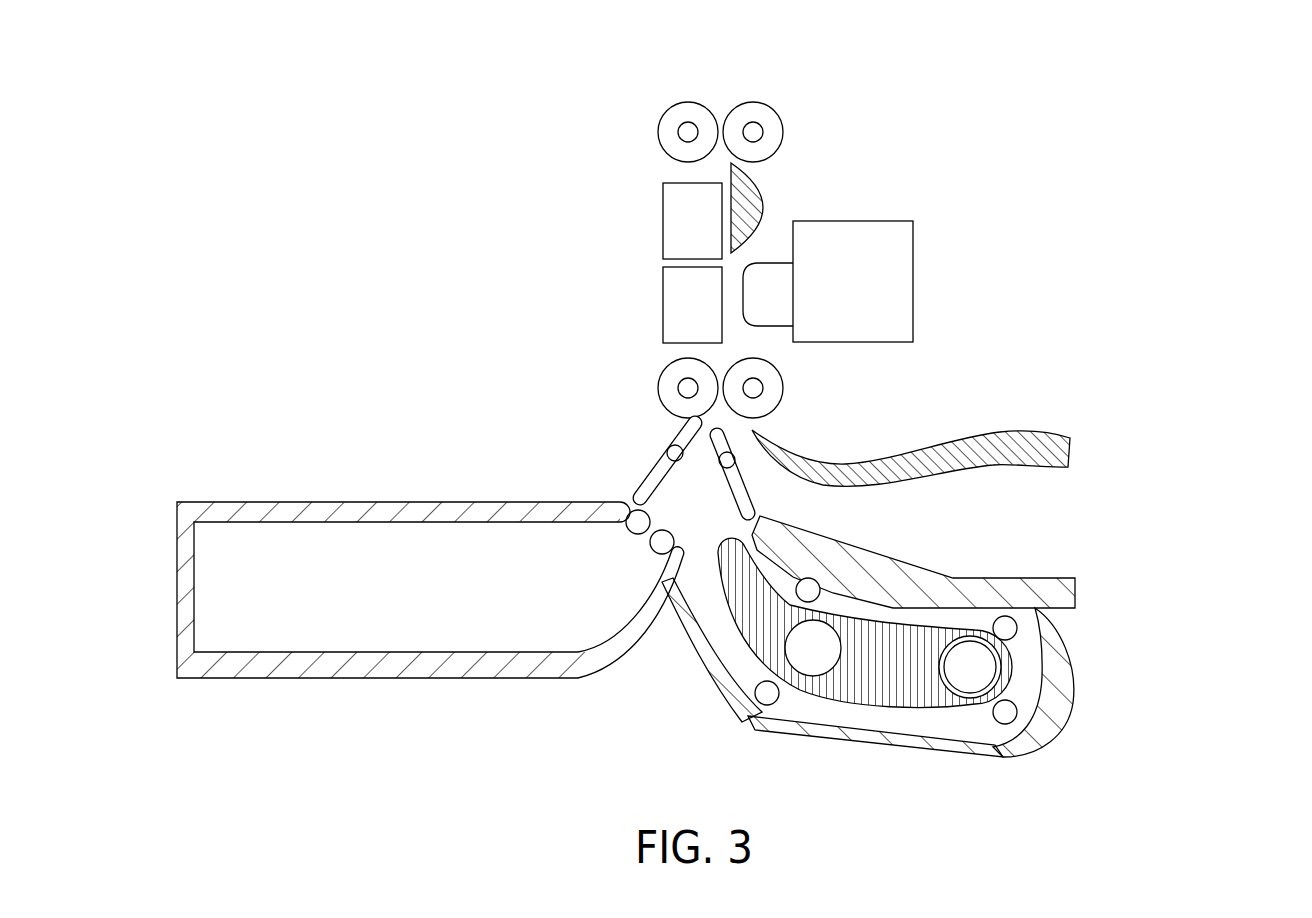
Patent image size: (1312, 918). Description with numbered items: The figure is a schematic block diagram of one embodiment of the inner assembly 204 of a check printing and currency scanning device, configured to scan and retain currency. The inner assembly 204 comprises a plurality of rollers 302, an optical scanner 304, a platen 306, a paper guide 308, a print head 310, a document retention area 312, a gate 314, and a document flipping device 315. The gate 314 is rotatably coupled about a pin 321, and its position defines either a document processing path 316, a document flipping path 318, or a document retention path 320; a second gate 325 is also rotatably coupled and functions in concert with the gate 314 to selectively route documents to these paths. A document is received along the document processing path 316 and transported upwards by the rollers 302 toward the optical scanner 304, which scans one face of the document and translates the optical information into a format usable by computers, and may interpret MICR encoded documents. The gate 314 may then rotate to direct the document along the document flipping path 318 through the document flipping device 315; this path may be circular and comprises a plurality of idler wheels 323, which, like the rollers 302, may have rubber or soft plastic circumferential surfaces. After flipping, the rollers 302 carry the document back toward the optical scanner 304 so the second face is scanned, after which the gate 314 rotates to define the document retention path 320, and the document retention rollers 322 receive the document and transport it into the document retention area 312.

The inner assembly 204 is at (230, 132).
The rollers 302 is at (752, 100).
The optical scanner 304 is at (663, 212).
The platen 306 is at (663, 305).
The paper guide 308 is at (763, 195).
The print head 310 is at (913, 280).
The document retention area 312 is at (430, 590).
The gate 314 is at (762, 469).
The document flipping device 315 is at (958, 662).
The document processing path 316 is at (795, 495).
The document flipping path 318 is at (722, 675).
The document retention path 320 is at (610, 560).
The pin 321 is at (733, 457).
The document retention rollers 322 is at (630, 515).
The idler wheels 323 is at (820, 591).
The gate 325 is at (653, 463).